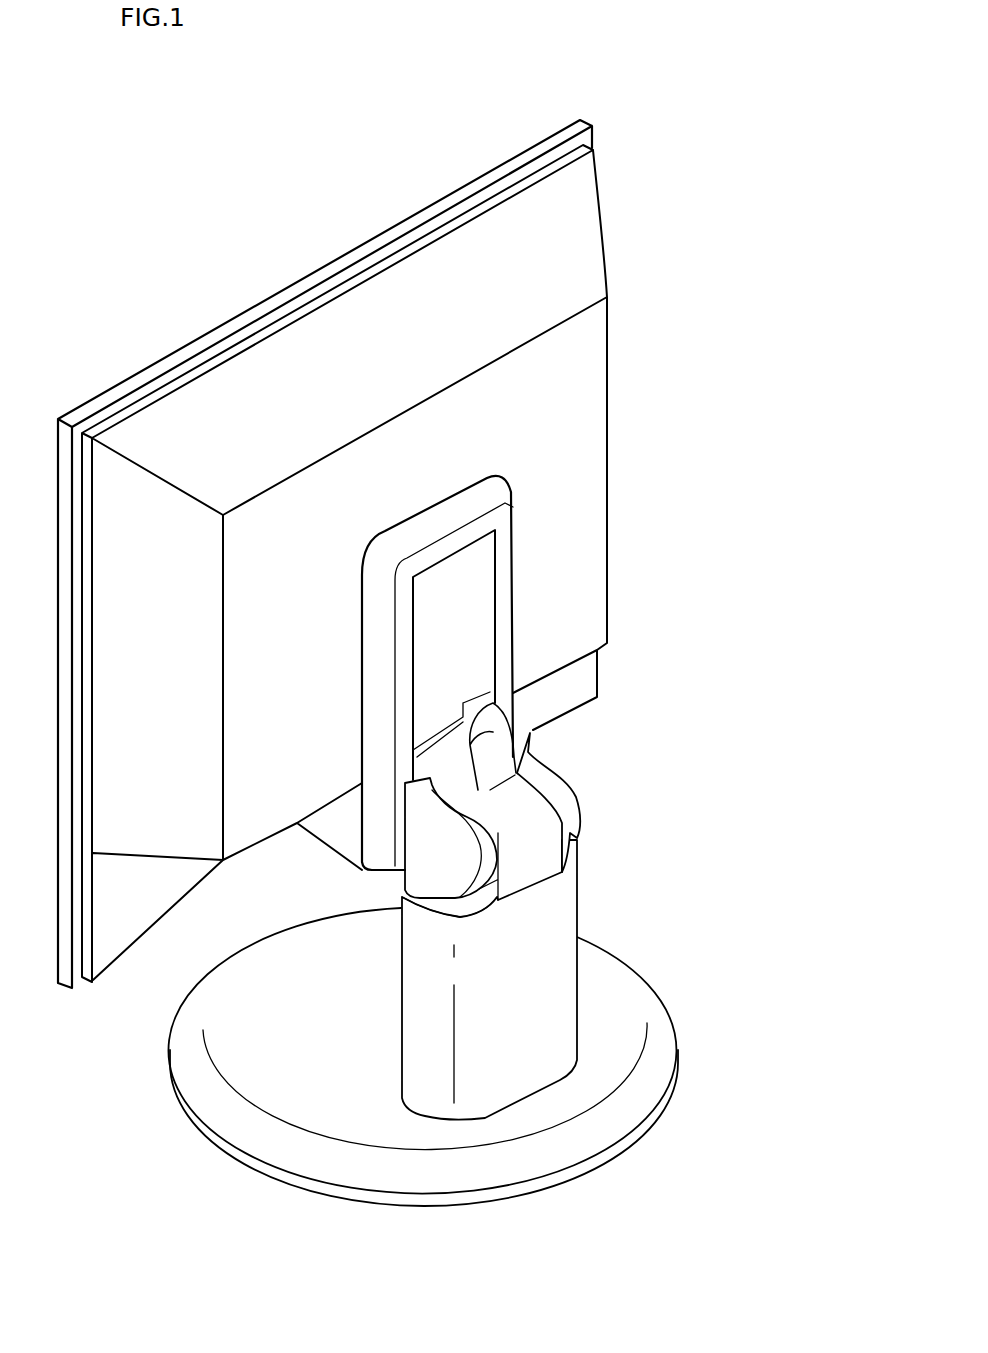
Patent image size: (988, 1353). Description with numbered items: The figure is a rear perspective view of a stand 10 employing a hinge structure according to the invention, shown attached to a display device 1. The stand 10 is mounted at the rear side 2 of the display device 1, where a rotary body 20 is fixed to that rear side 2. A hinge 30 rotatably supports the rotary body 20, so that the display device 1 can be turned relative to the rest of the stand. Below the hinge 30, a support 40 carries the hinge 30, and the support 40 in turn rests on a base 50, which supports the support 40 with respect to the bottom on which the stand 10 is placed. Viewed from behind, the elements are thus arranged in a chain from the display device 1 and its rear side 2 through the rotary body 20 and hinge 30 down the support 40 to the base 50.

The display device 1 is at (358, 340).
The rear side 2 is at (573, 423).
The stand 10 is at (735, 677).
The rotary body 20 is at (492, 733).
The hinge 30 is at (577, 782).
The support 40 is at (553, 978).
The base 50 is at (603, 1135).